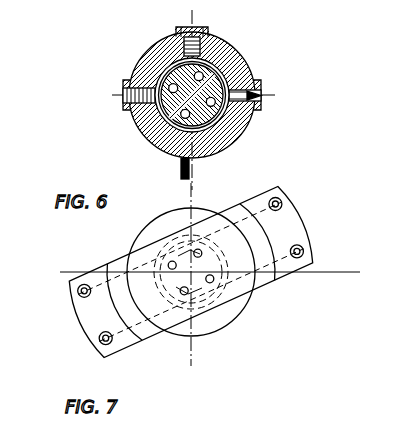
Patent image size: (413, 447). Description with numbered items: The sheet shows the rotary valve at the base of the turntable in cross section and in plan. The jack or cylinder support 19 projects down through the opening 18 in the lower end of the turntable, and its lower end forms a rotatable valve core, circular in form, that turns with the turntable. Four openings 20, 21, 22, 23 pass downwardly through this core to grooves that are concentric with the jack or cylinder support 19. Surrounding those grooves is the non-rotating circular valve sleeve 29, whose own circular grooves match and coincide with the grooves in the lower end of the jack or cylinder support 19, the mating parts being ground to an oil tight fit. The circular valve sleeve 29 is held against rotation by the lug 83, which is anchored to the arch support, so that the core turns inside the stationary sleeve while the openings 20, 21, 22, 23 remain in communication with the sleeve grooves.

In FIG. 6, the lug 83 is at (181, 168).
In FIG. 7, the opening 18 is at (213, 300).
In FIG. 7, the jack or cylinder support 19 is at (279, 278).
In FIG. 7, the opening 20 is at (77, 292).
In FIG. 7, the opening 21 is at (99, 340).
In FIG. 7, the opening 22 is at (282, 203).
In FIG. 7, the opening 23 is at (304, 250).
In FIG. 7, the circular valve sleeve 29 is at (236, 312).